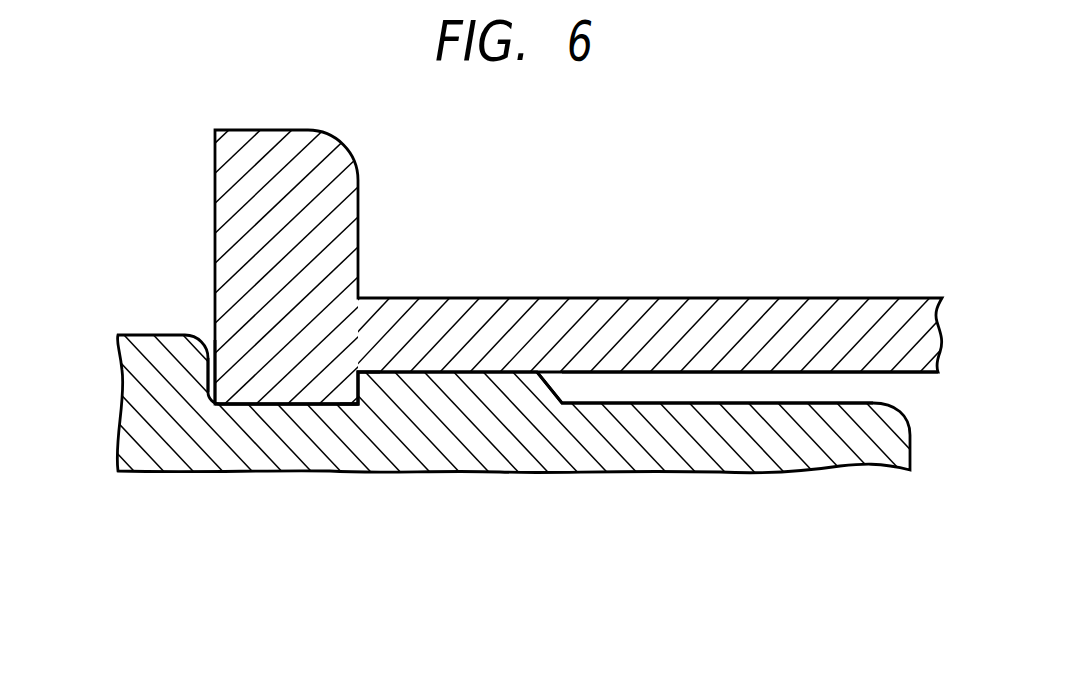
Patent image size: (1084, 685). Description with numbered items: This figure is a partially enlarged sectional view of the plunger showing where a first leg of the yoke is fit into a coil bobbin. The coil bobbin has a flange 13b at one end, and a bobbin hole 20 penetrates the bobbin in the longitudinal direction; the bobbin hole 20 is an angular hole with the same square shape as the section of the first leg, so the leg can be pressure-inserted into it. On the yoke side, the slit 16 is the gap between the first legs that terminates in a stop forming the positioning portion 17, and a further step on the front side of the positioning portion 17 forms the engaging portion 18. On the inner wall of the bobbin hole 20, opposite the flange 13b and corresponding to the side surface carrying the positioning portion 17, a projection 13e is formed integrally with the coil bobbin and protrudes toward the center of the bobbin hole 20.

The flange 13b is at (322, 152).
The projection 13e is at (286, 397).
The slit 16 is at (143, 335).
The positioning portion 17 is at (214, 370).
The engaging portion 18 is at (361, 390).
The bobbin hole 20 is at (728, 374).